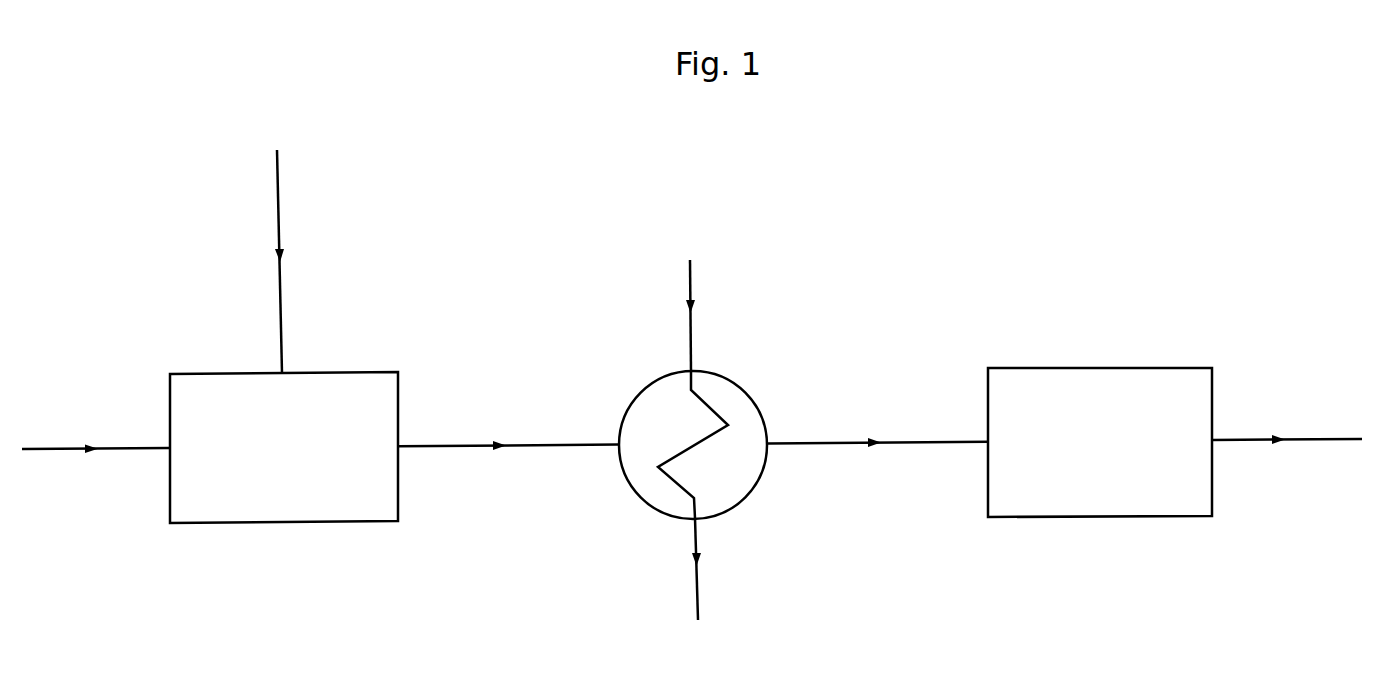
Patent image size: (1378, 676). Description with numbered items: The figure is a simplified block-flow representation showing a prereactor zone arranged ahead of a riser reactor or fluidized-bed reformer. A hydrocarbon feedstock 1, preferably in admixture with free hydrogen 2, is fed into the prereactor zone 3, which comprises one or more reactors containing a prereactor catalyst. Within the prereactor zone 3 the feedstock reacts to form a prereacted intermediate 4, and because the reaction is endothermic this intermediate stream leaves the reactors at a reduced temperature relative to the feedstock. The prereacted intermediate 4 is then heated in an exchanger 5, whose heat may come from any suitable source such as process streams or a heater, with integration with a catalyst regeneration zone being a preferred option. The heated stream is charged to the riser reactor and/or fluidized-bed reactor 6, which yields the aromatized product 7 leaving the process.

The hydrocarbon feedstock 1 is at (134, 438).
The free hydrogen 2 is at (272, 337).
The prereactor zone 3 is at (323, 531).
The prereacted intermediate 4 is at (565, 438).
The exchanger 5 is at (745, 383).
The riser reactor and/or fluidized-bed reactor 6 is at (1063, 360).
The aromatized product 7 is at (1248, 430).